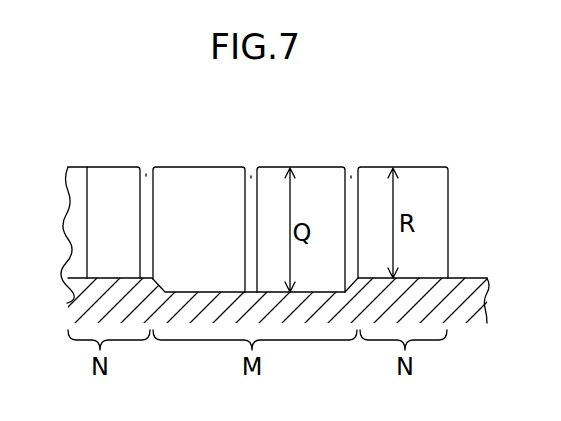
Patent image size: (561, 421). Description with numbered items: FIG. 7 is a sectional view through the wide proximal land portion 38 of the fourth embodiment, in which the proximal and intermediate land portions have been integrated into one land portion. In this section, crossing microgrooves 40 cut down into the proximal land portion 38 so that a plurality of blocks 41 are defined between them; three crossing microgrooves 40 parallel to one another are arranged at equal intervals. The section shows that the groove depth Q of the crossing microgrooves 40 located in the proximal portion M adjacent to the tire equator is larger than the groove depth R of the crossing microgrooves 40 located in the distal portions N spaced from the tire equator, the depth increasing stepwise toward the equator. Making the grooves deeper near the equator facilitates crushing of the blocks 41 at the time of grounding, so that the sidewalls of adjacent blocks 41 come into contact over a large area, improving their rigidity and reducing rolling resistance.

The proximal land portion 38 is at (399, 160).
The crossing microgrooves 40 is at (147, 172).
The blocks 41 is at (113, 184).